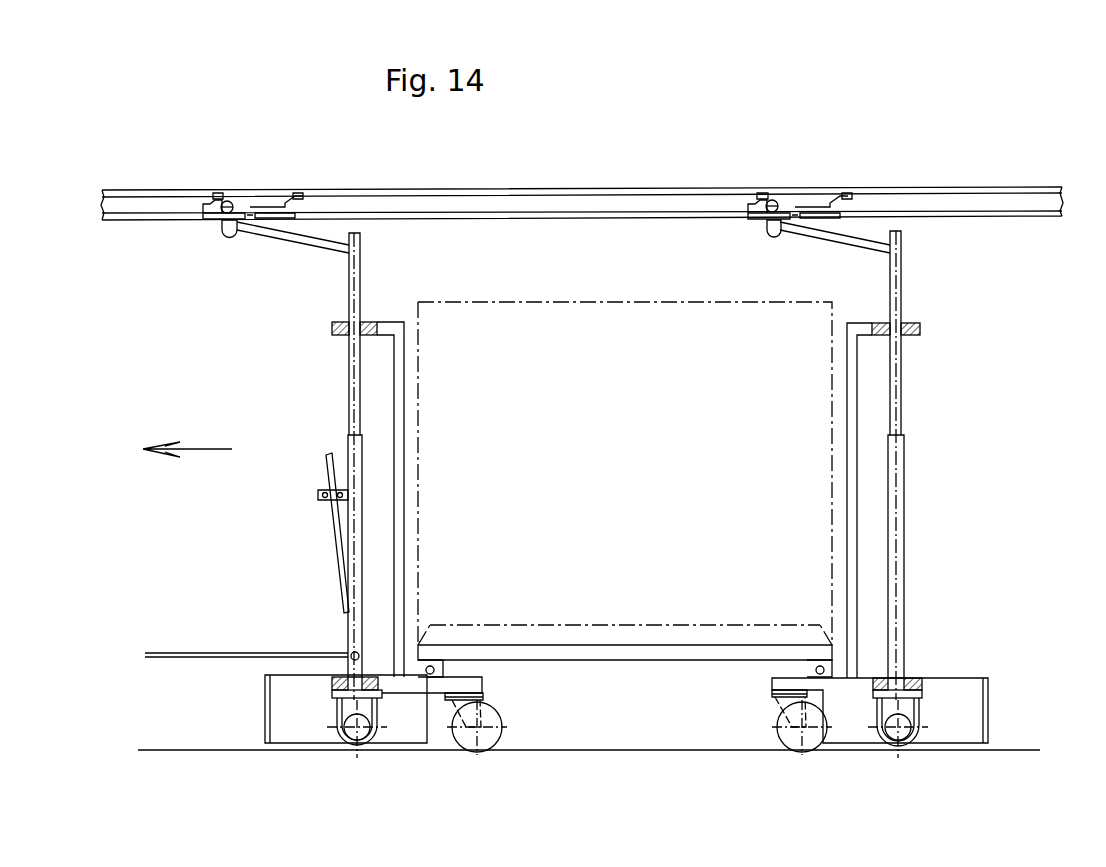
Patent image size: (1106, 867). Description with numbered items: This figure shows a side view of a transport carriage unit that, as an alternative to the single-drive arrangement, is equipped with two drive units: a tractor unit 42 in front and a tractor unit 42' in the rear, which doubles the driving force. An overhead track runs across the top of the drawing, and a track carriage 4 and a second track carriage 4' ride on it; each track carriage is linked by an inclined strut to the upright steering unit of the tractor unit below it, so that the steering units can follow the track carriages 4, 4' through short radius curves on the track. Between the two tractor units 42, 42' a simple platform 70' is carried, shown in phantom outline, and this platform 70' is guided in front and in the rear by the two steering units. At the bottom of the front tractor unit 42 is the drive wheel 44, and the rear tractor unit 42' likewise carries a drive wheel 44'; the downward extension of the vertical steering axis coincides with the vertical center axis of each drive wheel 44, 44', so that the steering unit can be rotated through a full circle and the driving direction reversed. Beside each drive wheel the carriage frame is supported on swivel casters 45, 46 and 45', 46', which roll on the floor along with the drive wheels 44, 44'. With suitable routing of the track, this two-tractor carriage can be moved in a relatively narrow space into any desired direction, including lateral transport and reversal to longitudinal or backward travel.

The track carriage 4 is at (253, 174).
The track carriage 4' is at (800, 178).
The tractor unit 42 is at (313, 482).
The tractor unit 42' is at (896, 482).
The drive wheel 44 is at (339, 750).
The drive wheel 44' is at (919, 741).
The swivel caster wheel 45 is at (502, 740).
The swivel caster fork 46 is at (464, 710).
The swivel caster wheel 45' is at (773, 739).
The swivel caster fork 46' is at (789, 708).
The platform 70' is at (625, 489).